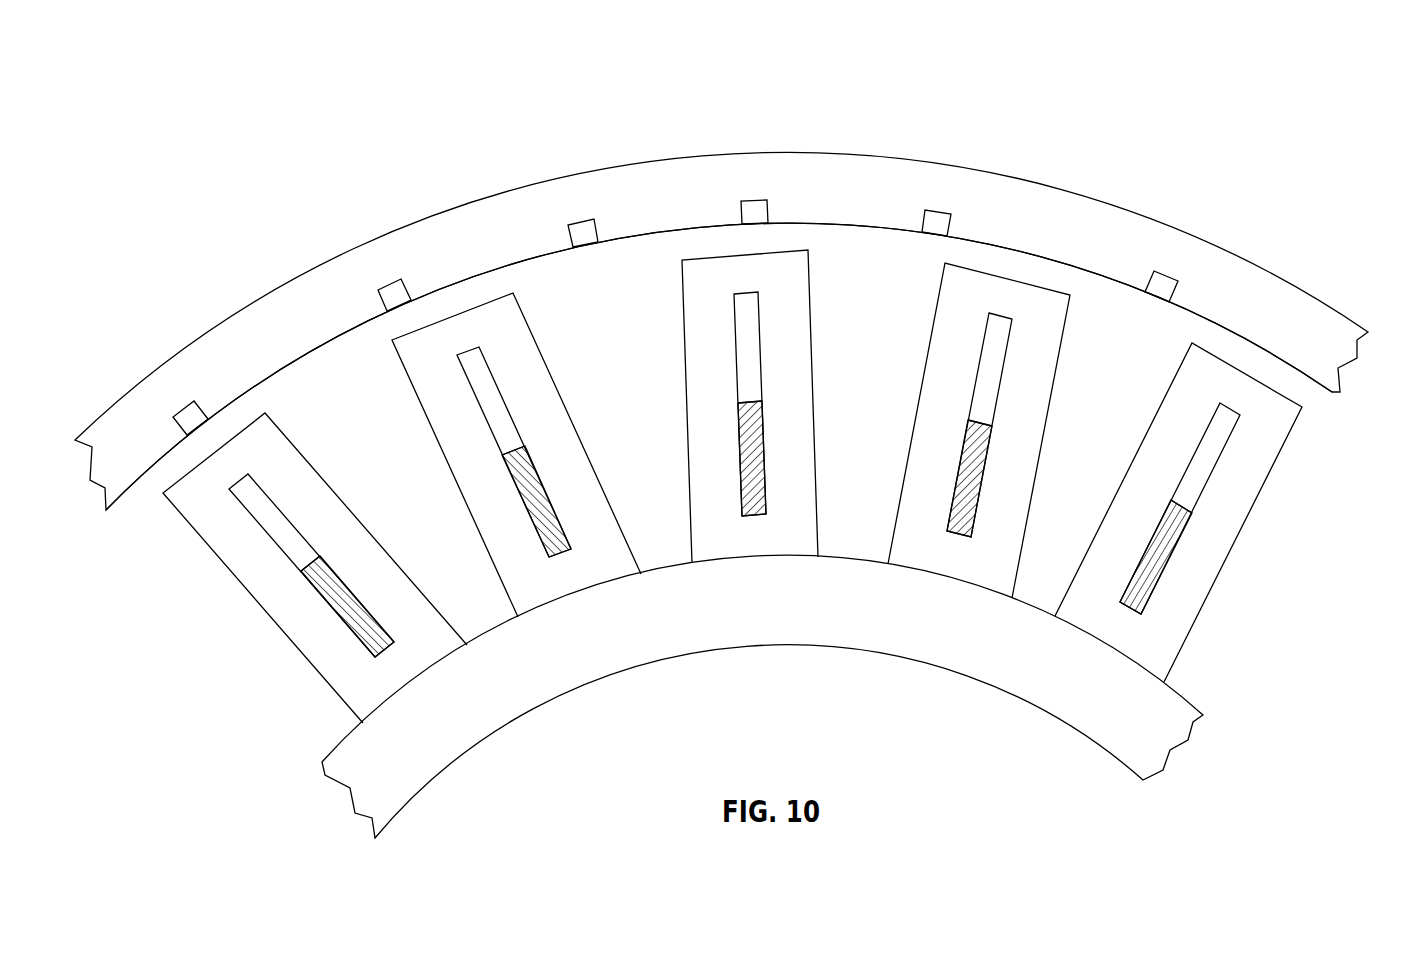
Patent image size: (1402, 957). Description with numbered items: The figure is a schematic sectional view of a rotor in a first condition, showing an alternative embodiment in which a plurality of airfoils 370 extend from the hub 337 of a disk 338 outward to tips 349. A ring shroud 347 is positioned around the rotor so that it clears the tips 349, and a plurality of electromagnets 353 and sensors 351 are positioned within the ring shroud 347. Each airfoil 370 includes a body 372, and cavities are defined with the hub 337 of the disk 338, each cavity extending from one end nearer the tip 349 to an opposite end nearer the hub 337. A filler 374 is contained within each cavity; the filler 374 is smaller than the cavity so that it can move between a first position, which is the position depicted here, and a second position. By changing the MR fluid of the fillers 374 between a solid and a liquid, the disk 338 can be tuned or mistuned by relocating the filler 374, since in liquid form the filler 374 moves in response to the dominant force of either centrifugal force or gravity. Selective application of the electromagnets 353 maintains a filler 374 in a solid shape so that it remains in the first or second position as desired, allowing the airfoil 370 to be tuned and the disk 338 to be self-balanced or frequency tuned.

The hub 337 is at (1157, 745).
The disk 338 is at (785, 712).
The ring shroud 347 is at (827, 152).
The tips 349 is at (1302, 407).
The sensors 351 is at (397, 282).
The electromagnets 353 is at (185, 410).
The airfoil 370 is at (778, 486).
The body 372 is at (1257, 498).
The filler 374 is at (1163, 570).